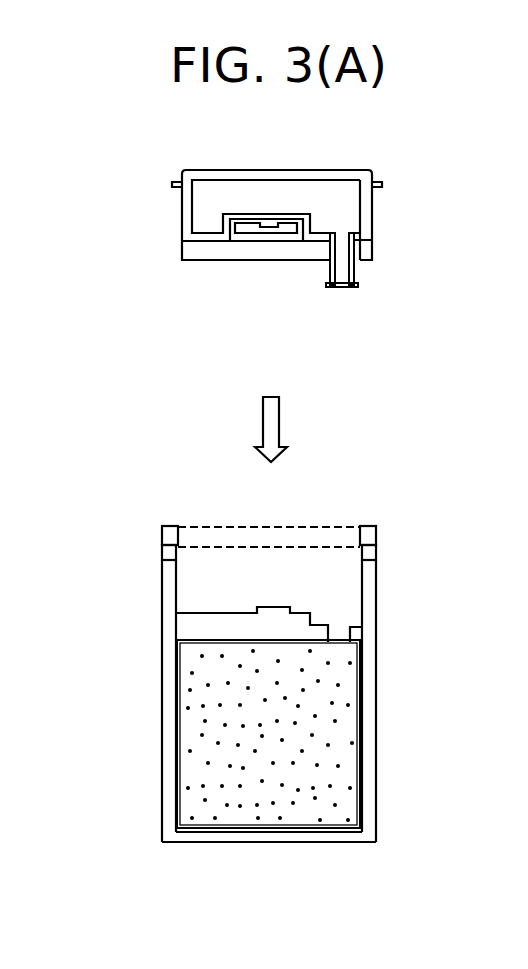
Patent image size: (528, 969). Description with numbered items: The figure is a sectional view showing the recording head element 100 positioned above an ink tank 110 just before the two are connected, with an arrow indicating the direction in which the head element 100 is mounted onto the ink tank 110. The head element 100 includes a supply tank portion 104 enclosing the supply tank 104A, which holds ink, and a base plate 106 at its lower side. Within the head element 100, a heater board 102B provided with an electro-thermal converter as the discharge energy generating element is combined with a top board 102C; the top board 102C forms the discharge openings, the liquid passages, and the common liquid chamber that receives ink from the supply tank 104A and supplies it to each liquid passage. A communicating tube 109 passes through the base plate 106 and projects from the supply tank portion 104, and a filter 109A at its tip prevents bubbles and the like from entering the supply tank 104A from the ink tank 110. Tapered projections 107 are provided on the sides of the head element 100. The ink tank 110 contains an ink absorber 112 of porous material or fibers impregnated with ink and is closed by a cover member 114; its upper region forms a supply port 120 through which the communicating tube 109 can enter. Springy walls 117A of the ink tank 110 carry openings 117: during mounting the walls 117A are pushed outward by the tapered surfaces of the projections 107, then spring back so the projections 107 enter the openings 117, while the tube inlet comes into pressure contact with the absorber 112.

The head element 100 is at (392, 218).
The supply tank portion 104 is at (310, 172).
The supply tank 104A is at (235, 190).
The projection 107 is at (172, 184).
The base plate 106 is at (366, 248).
The communicating tube 109 is at (360, 268).
The filter 109A is at (350, 290).
The top board 102C is at (232, 242).
The heater board 102B is at (278, 234).
The ink tank 110 is at (377, 690).
The ink absorber 112 is at (357, 758).
The cover member 114 is at (253, 833).
The opening 117 is at (162, 553).
The wall 117A is at (162, 537).
The supply port 120 is at (340, 630).